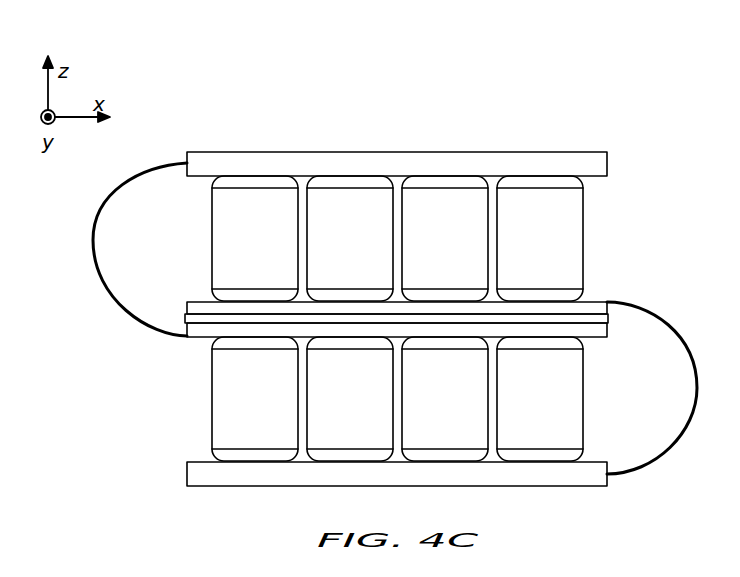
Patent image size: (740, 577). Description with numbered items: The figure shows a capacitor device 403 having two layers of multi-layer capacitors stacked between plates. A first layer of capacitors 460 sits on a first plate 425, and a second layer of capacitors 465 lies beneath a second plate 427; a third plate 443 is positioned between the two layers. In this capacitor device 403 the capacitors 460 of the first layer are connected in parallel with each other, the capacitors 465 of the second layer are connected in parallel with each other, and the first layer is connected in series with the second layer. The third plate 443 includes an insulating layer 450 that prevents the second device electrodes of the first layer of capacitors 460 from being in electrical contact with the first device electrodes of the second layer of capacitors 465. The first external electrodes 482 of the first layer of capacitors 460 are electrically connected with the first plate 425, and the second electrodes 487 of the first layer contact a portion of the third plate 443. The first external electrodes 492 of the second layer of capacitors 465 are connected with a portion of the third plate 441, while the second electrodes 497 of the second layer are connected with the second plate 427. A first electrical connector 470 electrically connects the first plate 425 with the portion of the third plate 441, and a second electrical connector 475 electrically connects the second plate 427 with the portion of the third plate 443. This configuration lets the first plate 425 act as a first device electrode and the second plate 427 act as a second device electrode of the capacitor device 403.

The capacitor device 403 is at (483, 123).
The first plate 425 is at (187, 474).
The second plate 427 is at (366, 151).
The portion of the third plate 441 is at (205, 301).
The third plate 443 is at (200, 339).
The insulating layer 450 is at (608, 320).
The capacitors of the first layer 460 is at (420, 399).
The capacitors of the second layer 465 is at (421, 238).
The first electrical connector 470 is at (650, 463).
The second electrical connector 475 is at (113, 192).
The first external electrodes of the first layer of capacitors 482 is at (270, 456).
The second electrodes of the first layer of capacitors 487 is at (276, 341).
The first external electrodes of the second layer of capacitors 492 is at (277, 294).
The second electrodes of the second layer of capacitors 497 is at (259, 179).